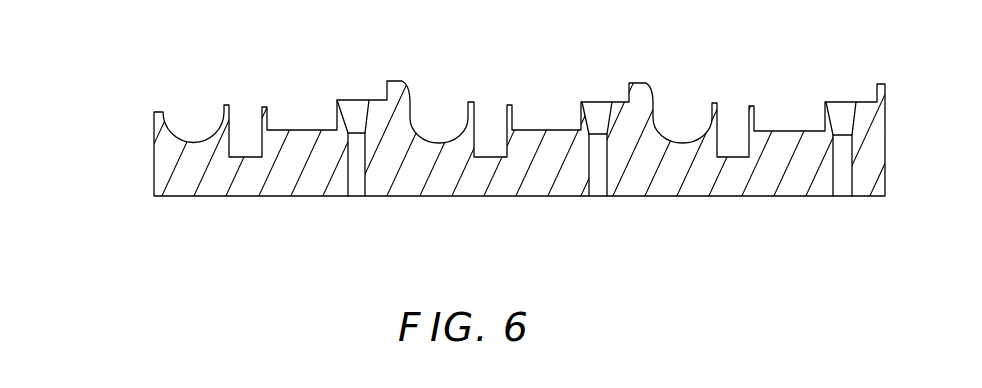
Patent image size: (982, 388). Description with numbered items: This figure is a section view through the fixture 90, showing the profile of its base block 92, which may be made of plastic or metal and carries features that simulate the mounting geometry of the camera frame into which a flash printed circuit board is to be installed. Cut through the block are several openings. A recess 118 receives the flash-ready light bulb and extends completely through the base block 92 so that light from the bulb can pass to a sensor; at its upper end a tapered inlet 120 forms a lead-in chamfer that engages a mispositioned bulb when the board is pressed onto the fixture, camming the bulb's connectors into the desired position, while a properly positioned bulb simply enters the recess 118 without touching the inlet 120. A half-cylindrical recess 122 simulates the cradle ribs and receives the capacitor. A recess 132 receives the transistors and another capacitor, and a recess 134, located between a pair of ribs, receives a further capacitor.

The fixture 90 is at (138, 157).
The base block 92 is at (220, 181).
The recess 118 is at (355, 184).
The tapered inlet 120 is at (345, 122).
The half-cylindrical recess 122 is at (189, 115).
The recess 132 is at (310, 107).
The recess 134 is at (245, 114).